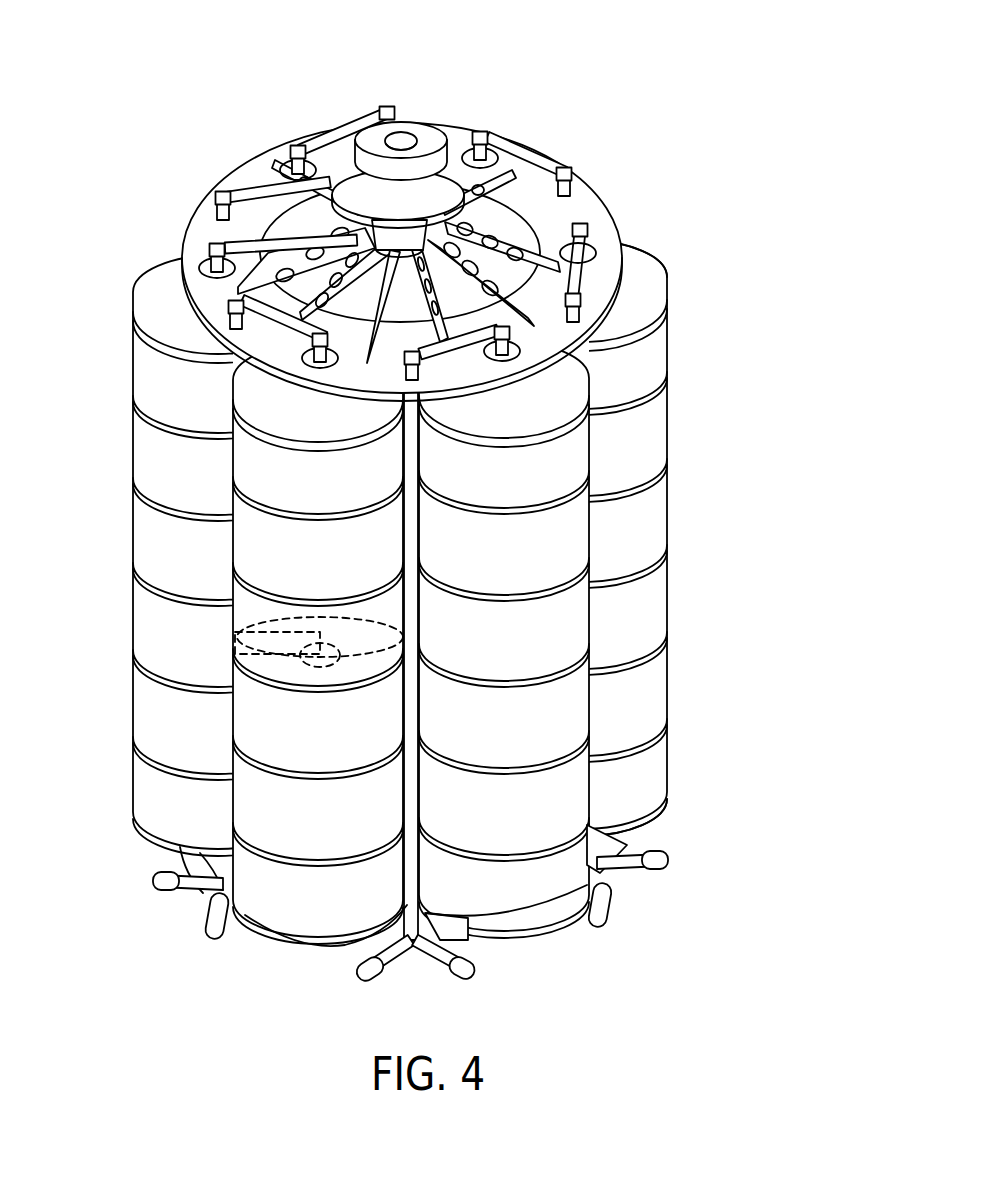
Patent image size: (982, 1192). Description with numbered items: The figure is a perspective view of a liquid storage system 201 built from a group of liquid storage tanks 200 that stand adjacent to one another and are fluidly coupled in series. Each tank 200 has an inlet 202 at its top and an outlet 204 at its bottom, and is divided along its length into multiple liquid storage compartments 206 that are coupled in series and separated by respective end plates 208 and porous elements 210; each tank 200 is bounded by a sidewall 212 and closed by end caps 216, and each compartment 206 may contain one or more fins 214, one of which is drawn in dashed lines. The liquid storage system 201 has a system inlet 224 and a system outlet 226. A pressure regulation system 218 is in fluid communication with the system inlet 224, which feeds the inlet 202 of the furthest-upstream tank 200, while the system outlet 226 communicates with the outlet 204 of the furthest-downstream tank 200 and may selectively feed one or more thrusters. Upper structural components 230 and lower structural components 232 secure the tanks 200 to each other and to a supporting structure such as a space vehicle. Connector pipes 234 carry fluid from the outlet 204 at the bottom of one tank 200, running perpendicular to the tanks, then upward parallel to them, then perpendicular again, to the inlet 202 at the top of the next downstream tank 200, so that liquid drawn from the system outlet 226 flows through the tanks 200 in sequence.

The liquid storage tank 200 is at (150, 468).
The liquid storage system 201 is at (552, 82).
The inlet 202 is at (620, 237).
The outlet 204 is at (670, 830).
The liquid storage compartment 206 is at (652, 617).
The end plate 208 is at (658, 395).
The porous element 210 is at (320, 672).
The sidewall 212 is at (147, 596).
The fin 214 is at (235, 637).
The end cap 216 is at (650, 274).
The pressure regulation system 218 is at (432, 100).
The system inlet 224 is at (263, 243).
The system outlet 226 is at (283, 190).
The upper structural component 230 is at (572, 205).
The lower structural component 232 is at (500, 957).
The connector pipe 234 is at (283, 332).